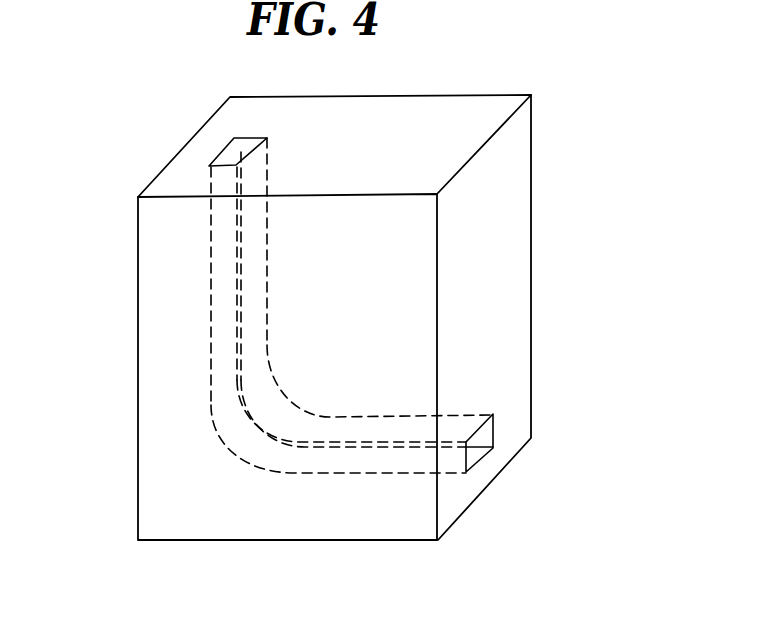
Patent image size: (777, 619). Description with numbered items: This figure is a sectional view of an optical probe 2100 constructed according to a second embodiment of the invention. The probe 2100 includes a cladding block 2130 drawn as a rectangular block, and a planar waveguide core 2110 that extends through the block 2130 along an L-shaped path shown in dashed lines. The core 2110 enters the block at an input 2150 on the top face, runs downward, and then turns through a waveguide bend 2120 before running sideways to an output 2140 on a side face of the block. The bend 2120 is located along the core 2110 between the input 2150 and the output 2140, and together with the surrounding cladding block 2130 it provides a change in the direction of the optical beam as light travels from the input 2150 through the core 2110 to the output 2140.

The optical probe 2100 is at (108, 288).
The planar waveguide core 2110 is at (223, 356).
The waveguide bend 2120 is at (277, 455).
The cladding block 2130 is at (478, 308).
The output 2140 is at (428, 443).
The input 2150 is at (227, 245).